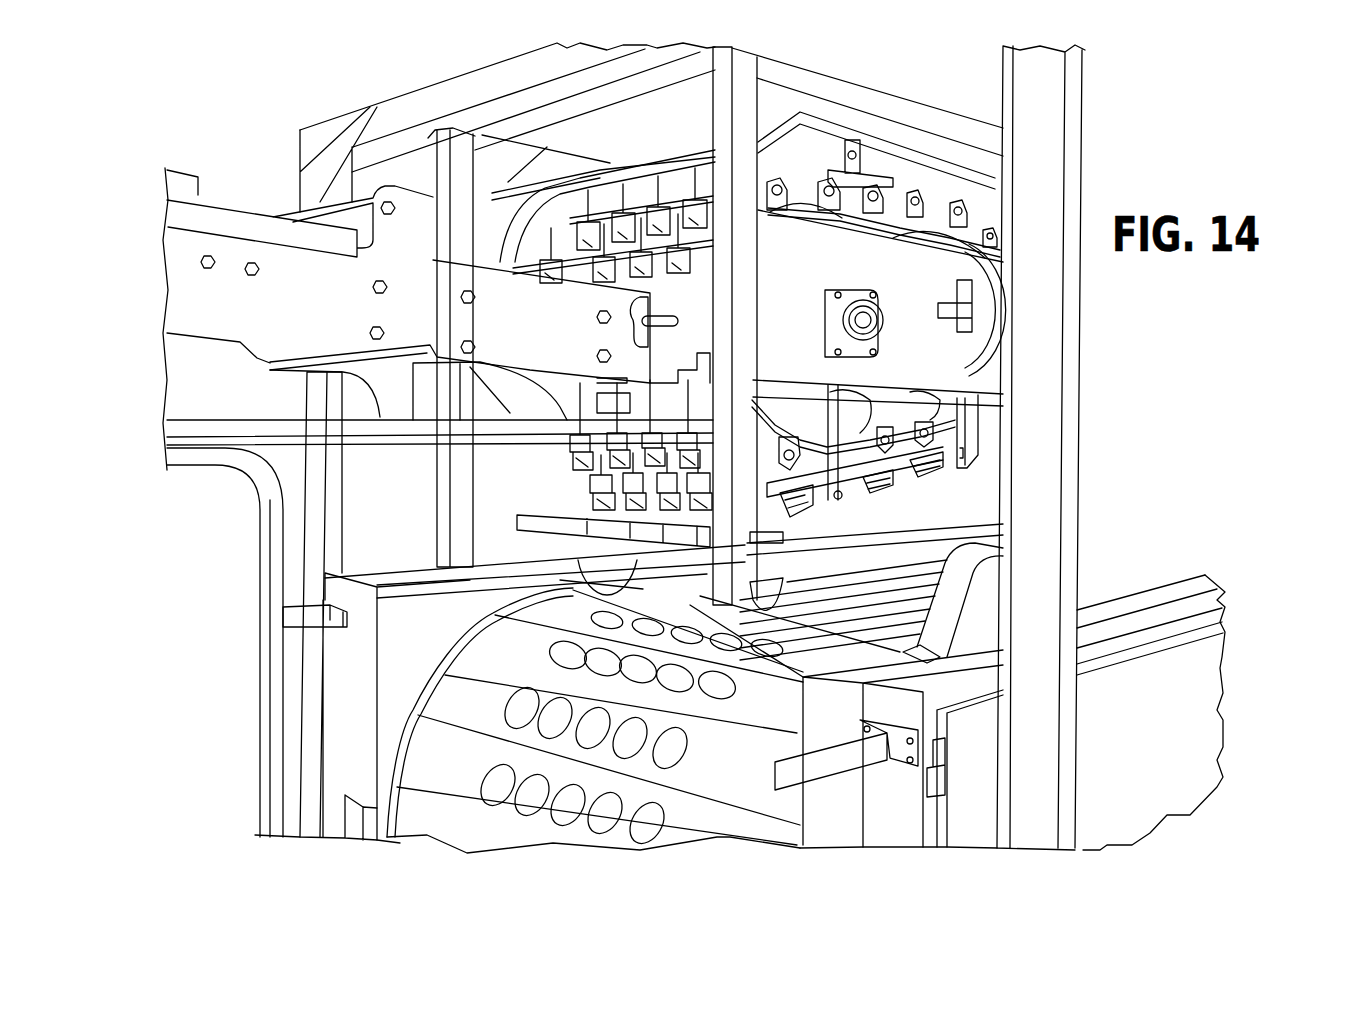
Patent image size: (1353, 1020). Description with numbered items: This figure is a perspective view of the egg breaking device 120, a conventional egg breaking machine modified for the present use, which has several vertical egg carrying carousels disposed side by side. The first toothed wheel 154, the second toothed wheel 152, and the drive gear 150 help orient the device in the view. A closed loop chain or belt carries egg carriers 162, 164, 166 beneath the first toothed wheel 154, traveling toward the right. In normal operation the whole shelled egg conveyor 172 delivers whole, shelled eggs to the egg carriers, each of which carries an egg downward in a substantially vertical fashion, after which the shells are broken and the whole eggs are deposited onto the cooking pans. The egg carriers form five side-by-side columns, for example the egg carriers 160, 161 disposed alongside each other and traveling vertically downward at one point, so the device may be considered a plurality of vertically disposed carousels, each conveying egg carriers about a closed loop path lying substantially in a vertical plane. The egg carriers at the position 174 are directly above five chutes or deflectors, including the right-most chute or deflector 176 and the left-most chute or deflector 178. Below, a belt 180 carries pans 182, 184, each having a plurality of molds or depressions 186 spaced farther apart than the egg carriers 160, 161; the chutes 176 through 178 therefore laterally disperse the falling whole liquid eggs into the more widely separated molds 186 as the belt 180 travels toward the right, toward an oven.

The egg breaking device 120 is at (818, 270).
The drive gear 150 is at (975, 300).
The second toothed wheel 152 is at (960, 217).
The first toothed wheel 154 is at (816, 417).
The egg carrier 160 is at (603, 457).
The egg carrier 161 is at (570, 462).
The egg carrier 162 is at (847, 488).
The egg carrier 164 is at (873, 480).
The egg carrier 166 is at (923, 477).
The whole shelled egg conveyor 172 is at (548, 327).
The position of egg carriers above chutes 174 is at (610, 505).
The right-most chute or deflector 176 is at (770, 590).
The left-most chute or deflector 178 is at (603, 580).
The belt 180 is at (467, 633).
The pan 182 is at (740, 693).
The pan 184 is at (697, 760).
The molds or depressions 186 is at (480, 777).